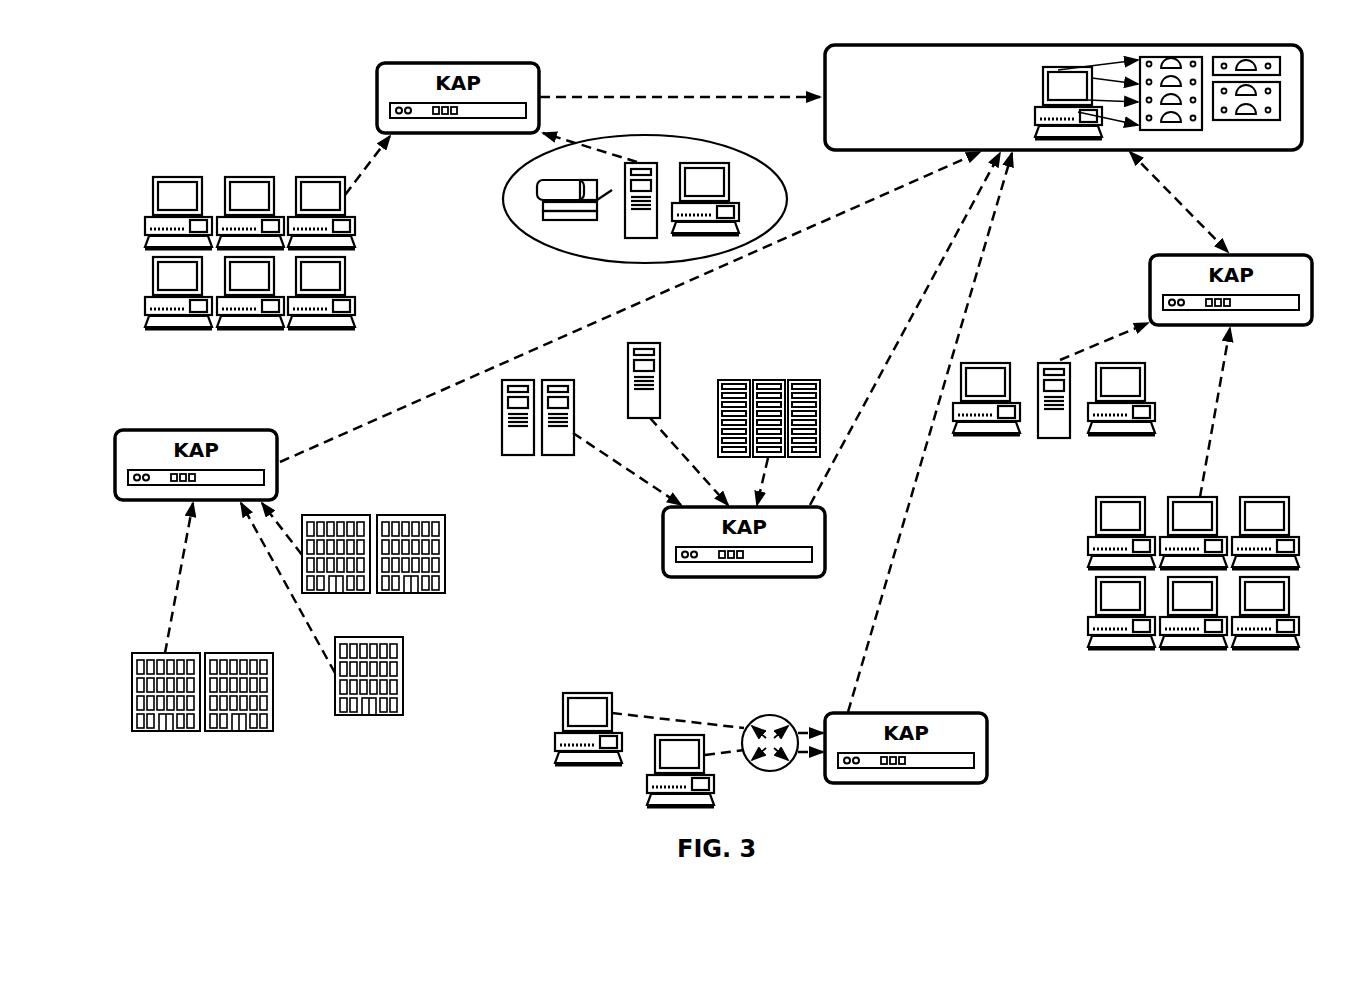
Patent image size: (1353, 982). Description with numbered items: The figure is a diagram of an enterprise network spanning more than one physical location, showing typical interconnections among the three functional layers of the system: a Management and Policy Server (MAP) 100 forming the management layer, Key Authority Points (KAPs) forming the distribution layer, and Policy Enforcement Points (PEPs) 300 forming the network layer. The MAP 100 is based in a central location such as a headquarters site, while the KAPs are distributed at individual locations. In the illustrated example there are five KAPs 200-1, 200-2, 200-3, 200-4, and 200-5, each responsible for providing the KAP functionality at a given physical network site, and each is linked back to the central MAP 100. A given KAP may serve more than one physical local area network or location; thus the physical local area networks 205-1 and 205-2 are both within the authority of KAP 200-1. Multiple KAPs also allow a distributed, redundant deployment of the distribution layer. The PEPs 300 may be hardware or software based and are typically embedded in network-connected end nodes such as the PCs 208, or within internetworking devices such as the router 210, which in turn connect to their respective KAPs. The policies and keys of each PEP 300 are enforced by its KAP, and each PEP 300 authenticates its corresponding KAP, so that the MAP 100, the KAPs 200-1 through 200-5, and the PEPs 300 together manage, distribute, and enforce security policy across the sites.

The Management and Policy Server (MAP) 100 is at (825, 58).
The Key Authority Point (KAP) 200-1 is at (377, 75).
The Key Authority Point (KAP) 200-2 is at (220, 430).
The Key Authority Point (KAP) 200-3 is at (663, 537).
The Key Authority Point (KAP) 200-4 is at (925, 713).
The Key Authority Point (KAP) 200-5 is at (1245, 255).
The physical local area network 205-1 is at (220, 219).
The physical local area network 205-2 is at (525, 238).
The PC 208 is at (250, 177).
The router 210 is at (770, 715).
The Policy Enforcement Point (PEP) 300 is at (641, 238).